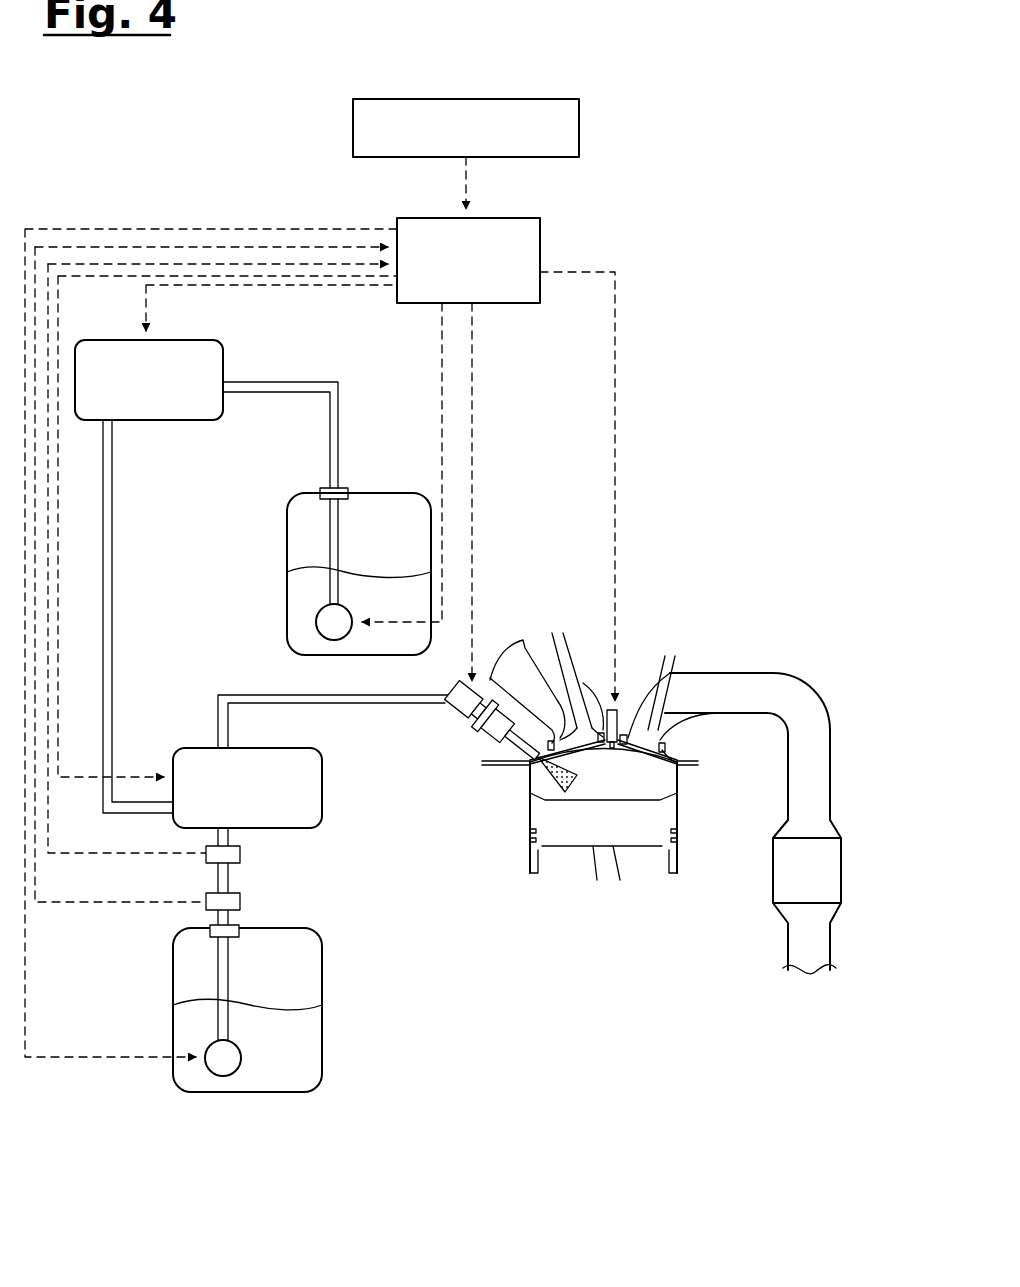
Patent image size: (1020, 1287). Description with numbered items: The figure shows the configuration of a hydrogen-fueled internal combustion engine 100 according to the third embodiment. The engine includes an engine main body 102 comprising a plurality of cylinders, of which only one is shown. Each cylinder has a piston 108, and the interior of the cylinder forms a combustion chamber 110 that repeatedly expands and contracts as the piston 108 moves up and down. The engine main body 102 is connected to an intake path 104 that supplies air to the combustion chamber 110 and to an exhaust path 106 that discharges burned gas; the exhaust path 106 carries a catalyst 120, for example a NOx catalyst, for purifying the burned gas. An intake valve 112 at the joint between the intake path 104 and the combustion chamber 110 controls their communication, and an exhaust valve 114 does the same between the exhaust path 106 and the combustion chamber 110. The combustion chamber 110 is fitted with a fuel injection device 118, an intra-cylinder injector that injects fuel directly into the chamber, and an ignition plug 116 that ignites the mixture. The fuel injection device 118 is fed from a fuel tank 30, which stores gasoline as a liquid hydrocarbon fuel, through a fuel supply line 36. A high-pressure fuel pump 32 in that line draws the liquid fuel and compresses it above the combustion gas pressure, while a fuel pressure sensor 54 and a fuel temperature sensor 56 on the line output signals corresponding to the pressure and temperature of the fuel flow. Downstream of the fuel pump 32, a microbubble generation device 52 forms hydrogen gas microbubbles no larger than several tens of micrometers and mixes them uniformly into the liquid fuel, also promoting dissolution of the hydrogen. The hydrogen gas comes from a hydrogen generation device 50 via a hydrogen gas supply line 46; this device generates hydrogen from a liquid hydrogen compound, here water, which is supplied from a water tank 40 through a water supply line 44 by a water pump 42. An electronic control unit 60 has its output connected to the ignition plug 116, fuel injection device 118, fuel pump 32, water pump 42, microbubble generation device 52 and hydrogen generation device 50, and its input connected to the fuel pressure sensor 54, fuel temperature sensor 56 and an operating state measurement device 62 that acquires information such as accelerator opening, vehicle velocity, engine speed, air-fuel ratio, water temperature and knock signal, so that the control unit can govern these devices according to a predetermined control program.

The fuel tank 30 is at (322, 968).
The fuel pump 32 is at (215, 1077).
The fuel supply line 36 is at (358, 706).
The water tank 40 is at (288, 531).
The water pump 42 is at (317, 620).
The water supply line 44 is at (330, 447).
The hydrogen gas supply line 46 is at (113, 487).
The hydrogen generation device 50 is at (223, 361).
The microbubble generation device 52 is at (322, 795).
The fuel pressure sensor 54 is at (240, 900).
The fuel temperature sensor 56 is at (240, 853).
The electronic control unit 60 is at (517, 218).
The operating state measurement device 62 is at (468, 99).
The hydrogen-fueled internal combustion engine 100 is at (695, 288).
The engine main body 102 is at (637, 628).
The intake path 104 is at (540, 670).
The exhaust path 106 is at (692, 690).
The piston 108 is at (570, 828).
The combustion chamber 110 is at (662, 781).
The intake valve 112 is at (557, 760).
The exhaust valve 114 is at (663, 738).
The ignition plug 116 is at (627, 735).
The fuel injection device 118 is at (460, 725).
The catalyst 120 is at (783, 872).